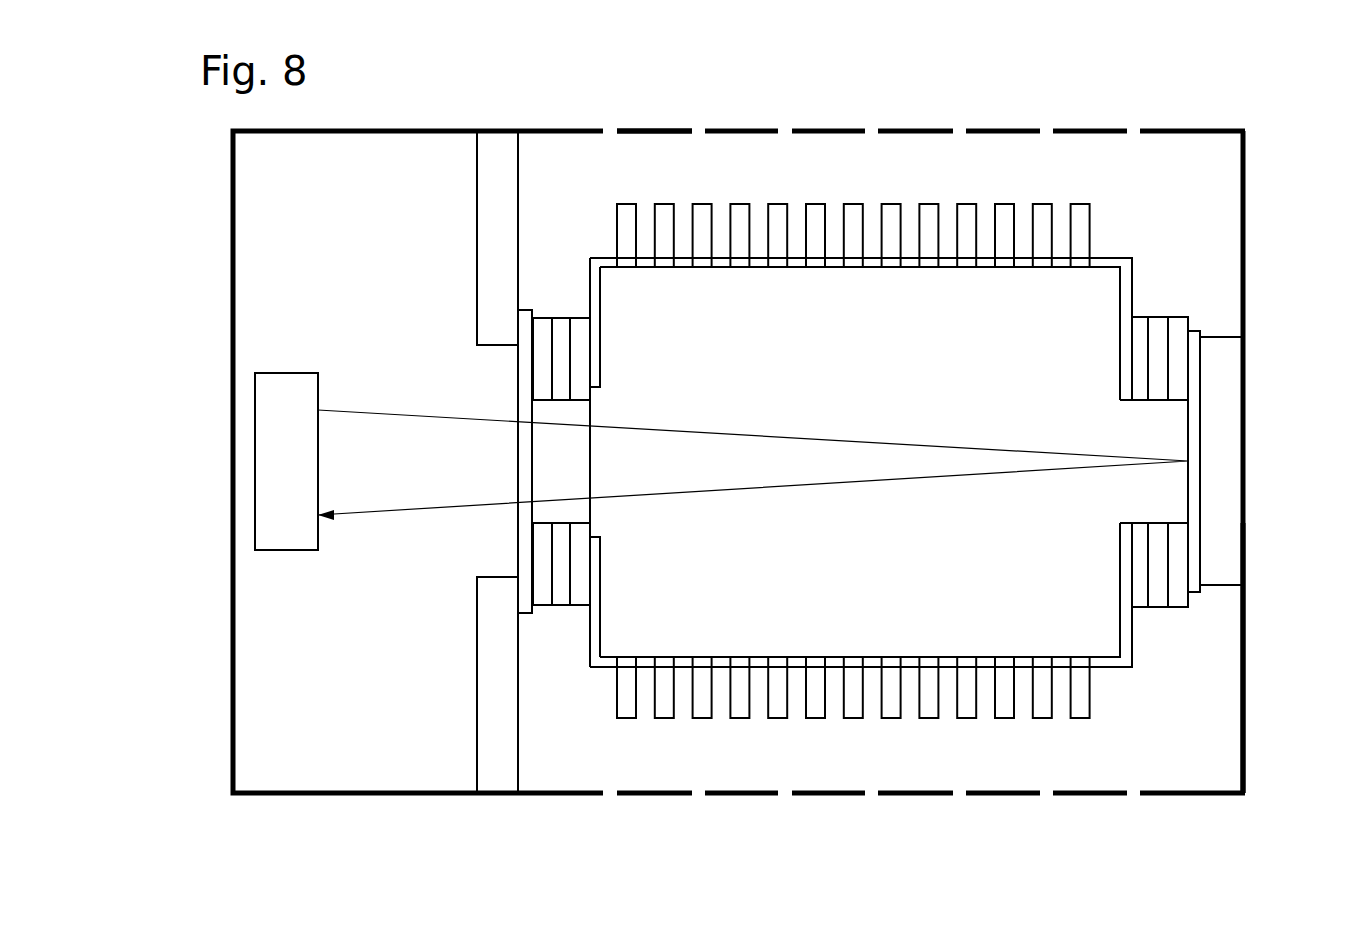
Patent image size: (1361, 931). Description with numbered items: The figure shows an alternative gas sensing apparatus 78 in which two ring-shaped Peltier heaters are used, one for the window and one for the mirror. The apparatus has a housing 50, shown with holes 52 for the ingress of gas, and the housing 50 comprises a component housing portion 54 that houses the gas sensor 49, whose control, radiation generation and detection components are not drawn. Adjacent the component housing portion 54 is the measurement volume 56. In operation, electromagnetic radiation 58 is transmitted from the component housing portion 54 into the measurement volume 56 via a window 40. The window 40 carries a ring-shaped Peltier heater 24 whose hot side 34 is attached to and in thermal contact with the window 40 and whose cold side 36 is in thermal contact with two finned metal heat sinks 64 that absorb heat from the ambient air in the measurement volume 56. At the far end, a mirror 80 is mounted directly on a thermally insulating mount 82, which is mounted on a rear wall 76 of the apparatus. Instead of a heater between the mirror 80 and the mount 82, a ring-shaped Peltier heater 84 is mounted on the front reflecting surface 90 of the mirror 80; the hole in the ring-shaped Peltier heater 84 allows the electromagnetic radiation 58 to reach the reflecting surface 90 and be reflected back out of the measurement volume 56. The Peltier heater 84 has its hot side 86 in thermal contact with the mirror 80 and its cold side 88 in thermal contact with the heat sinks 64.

The ring-shaped Peltier heater 24 is at (559, 608).
The hot side 34 is at (540, 364).
The cold side 36 is at (584, 335).
The window 40 is at (522, 463).
The gas sensor 49 is at (276, 447).
The housing 50 is at (398, 128).
The holes 52 is at (611, 129).
The component housing portion 54 is at (347, 689).
The measurement volume 56 is at (798, 573).
The electromagnetic radiation 58 is at (367, 408).
The heat sinks 64 is at (855, 204).
The rear wall 76 is at (1245, 603).
The gas sensing apparatus 78 is at (1173, 812).
The mirror 80 is at (1195, 510).
The thermally insulating mount 82 is at (1224, 437).
The ring-shaped Peltier heater 84 is at (1162, 608).
The hot side 86 is at (1178, 362).
The cold side 88 is at (1140, 346).
The front (reflecting) surface 90 is at (1188, 487).